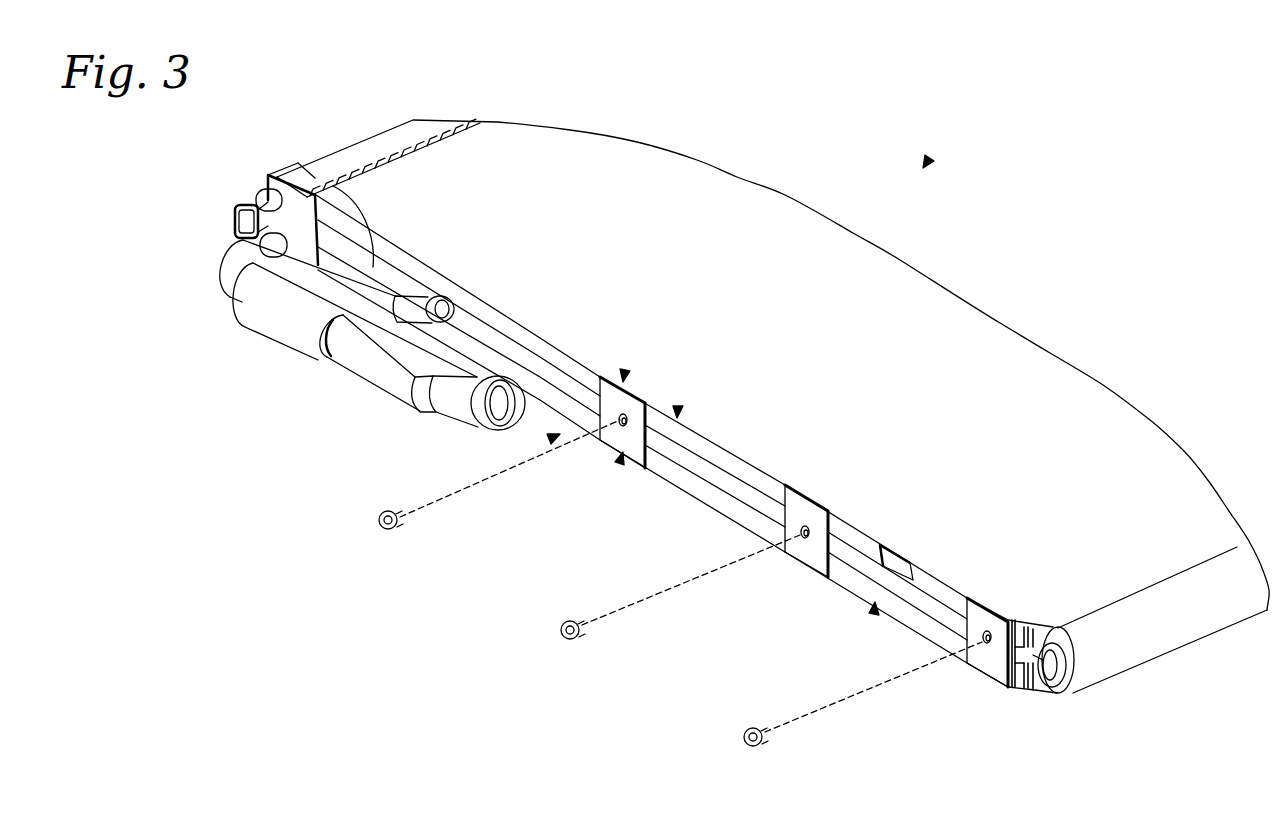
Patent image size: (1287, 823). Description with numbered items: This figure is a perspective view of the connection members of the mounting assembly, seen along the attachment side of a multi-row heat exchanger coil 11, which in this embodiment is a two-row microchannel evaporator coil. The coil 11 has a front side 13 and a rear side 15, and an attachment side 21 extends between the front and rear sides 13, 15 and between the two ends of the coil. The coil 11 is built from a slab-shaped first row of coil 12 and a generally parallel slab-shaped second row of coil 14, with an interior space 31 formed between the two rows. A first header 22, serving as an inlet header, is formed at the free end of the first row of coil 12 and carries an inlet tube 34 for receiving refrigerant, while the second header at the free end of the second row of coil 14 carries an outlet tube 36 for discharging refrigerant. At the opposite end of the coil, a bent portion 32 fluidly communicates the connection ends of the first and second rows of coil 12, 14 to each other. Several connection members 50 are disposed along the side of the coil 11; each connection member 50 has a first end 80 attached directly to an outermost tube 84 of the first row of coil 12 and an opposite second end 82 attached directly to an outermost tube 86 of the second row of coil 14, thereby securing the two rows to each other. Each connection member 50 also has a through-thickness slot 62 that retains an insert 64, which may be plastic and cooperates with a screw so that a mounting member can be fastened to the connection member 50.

The multi-row heat exchanger coil 11 is at (927, 162).
The first row of coil 12 is at (687, 437).
The front side 13 is at (907, 353).
The second row of coil 14 is at (747, 512).
The rear side 15 is at (843, 593).
The attachment side 21 is at (550, 438).
The first header 22 is at (373, 140).
The interior space 31 is at (717, 477).
The bent portion 32 is at (1120, 642).
The inlet tube 34 is at (317, 167).
The outlet tube 36 is at (372, 382).
The connection member 50 is at (615, 425).
The through-thickness slot 62 is at (990, 652).
The insert 64 is at (767, 750).
The first end 80 is at (623, 376).
The second end 82 is at (621, 458).
The outermost tube 84 is at (677, 410).
The outermost tube 86 is at (874, 608).